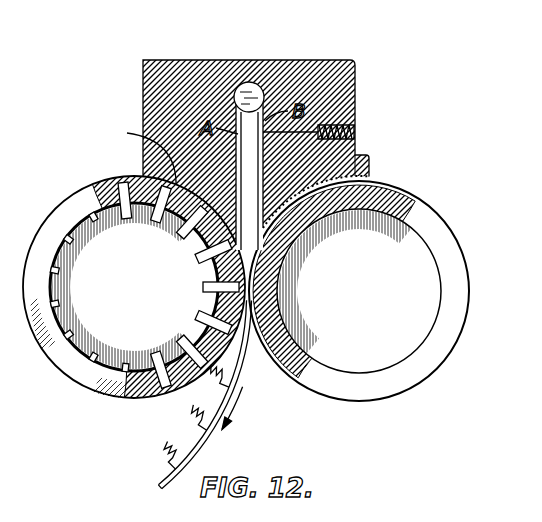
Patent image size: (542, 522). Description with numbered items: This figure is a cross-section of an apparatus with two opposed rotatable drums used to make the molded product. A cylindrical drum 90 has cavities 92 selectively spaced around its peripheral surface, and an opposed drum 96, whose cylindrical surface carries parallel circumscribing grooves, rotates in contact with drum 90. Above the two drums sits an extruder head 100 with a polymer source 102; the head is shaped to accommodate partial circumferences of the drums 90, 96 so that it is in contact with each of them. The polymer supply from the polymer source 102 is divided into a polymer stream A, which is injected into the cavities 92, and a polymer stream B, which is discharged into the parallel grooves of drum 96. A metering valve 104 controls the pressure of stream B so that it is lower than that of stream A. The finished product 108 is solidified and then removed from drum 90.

The extruder head 100 is at (247, 59).
The polymer source 102 is at (256, 100).
The metering valve 104 is at (355, 133).
The cylindrical drum 90 is at (98, 183).
The cavities 92 is at (122, 178).
The opposed drum 96 is at (436, 206).
The finished product 108 is at (189, 447).